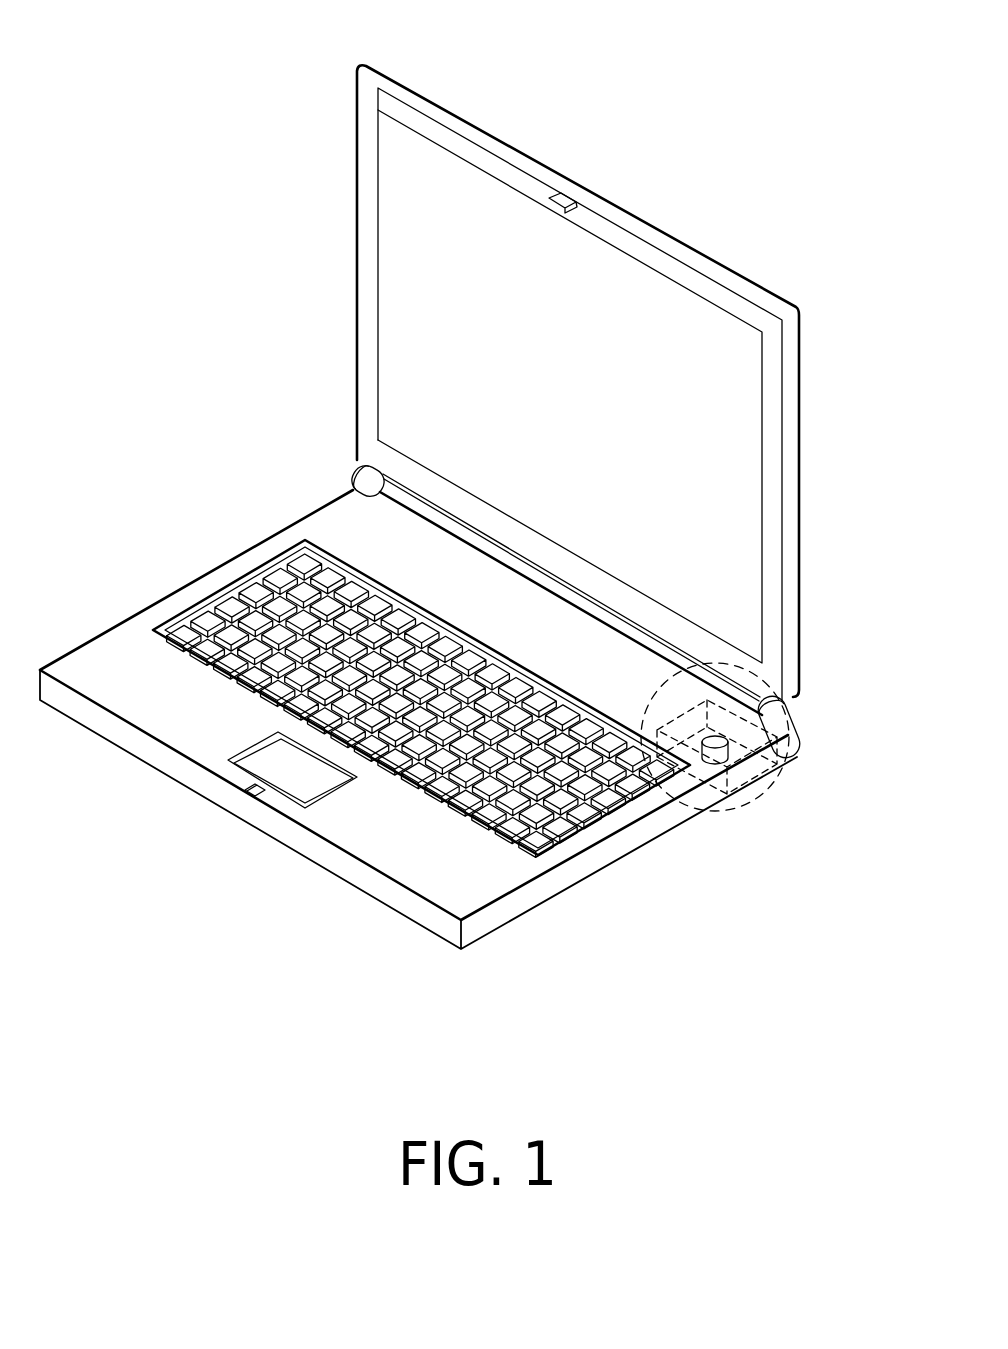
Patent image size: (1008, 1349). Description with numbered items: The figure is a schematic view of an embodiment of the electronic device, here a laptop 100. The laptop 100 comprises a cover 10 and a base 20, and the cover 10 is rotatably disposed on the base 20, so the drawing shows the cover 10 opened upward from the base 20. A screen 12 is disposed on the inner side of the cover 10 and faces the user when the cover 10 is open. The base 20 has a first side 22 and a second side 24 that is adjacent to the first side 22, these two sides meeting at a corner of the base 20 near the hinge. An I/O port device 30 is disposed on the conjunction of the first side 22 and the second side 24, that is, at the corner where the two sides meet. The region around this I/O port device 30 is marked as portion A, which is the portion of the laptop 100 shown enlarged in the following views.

The laptop 100 is at (182, 43).
The cover 10 is at (380, 275).
The screen 12 is at (433, 341).
The base 20 is at (108, 652).
The first side 22 is at (583, 865).
The second side 24 is at (777, 742).
The I/O port device 30 is at (780, 770).
The portion A is at (802, 713).